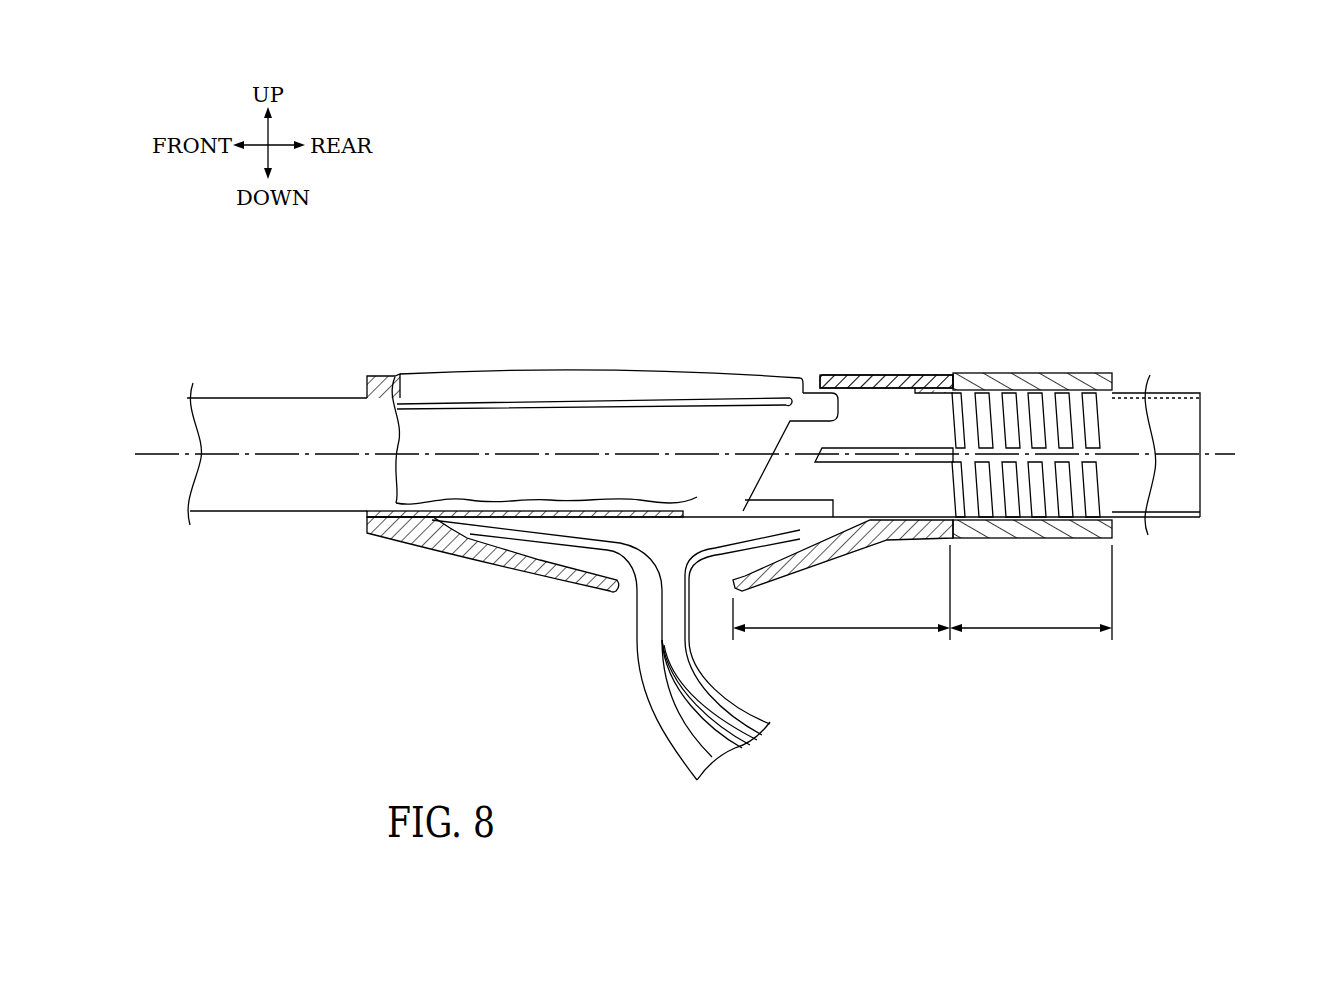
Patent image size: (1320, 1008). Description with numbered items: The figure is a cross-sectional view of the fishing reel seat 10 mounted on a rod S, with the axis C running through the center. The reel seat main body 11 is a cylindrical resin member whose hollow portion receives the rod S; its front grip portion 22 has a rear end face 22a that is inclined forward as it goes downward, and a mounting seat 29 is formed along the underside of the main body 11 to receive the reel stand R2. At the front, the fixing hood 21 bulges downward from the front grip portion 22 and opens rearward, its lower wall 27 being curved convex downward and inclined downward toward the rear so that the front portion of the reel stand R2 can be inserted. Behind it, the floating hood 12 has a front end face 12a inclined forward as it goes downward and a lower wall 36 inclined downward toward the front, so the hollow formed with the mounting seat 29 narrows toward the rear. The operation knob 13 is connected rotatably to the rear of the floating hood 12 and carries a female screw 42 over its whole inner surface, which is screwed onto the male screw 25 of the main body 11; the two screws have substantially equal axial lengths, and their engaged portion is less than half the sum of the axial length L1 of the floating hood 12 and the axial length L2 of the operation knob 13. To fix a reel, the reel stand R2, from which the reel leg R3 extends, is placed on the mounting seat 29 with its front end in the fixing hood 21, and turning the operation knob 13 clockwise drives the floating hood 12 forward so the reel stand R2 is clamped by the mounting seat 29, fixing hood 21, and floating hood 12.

The rod S is at (262, 410).
The fishing reel seat 10 is at (595, 324).
The reel seat main body 11 is at (611, 418).
The front grip portion 22 is at (532, 422).
The rear end face of the front grip portion 22a is at (835, 392).
The mounting seat 29 is at (728, 518).
The floating hood 12 is at (843, 460).
The front end face of the floating hood 12a is at (710, 598).
The lower wall 36 is at (860, 554).
The male screw 25 is at (1061, 459).
The operation knob 13 is at (1090, 375).
The female screw 42 is at (1067, 503).
The fixing hood 21 is at (493, 507).
The lower wall 27 is at (565, 582).
The reel stand R2 is at (588, 544).
The reel leg R3 is at (673, 723).
The axial length of the floating hood L1 is at (841, 602).
The axial length of the operation knob L2 is at (1031, 602).
The axis C is at (700, 454).